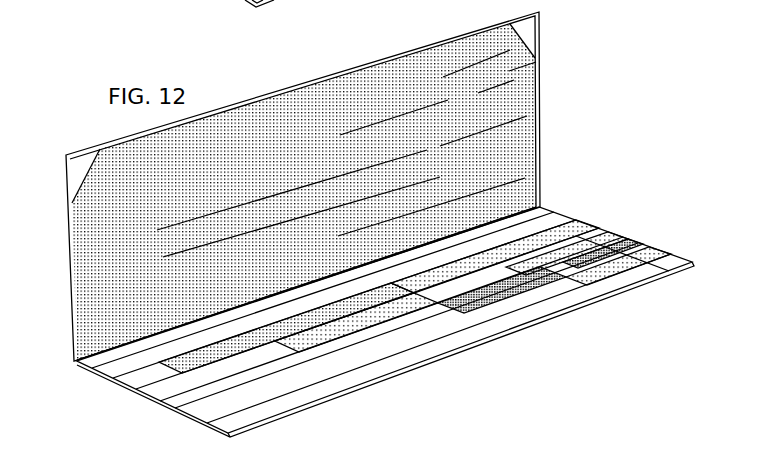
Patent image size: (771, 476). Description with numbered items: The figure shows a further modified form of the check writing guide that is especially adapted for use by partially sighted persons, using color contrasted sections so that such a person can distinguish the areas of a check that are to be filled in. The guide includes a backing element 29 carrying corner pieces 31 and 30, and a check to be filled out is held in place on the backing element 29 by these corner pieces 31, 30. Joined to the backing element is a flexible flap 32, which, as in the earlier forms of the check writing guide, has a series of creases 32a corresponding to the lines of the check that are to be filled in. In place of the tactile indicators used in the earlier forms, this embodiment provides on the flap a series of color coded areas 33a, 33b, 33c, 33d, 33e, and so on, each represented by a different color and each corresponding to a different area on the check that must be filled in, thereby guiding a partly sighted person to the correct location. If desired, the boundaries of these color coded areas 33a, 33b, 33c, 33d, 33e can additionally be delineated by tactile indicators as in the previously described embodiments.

The backing element 29 is at (540, 160).
The corner piece 30 is at (528, 33).
The corner piece 31 is at (78, 168).
The flexible flap 32 is at (337, 381).
The creases 32a is at (415, 340).
The color coded area 33a is at (600, 292).
The color coded area 33b is at (505, 298).
The color coded area 33c is at (617, 242).
The color coded area 33d is at (165, 373).
The color coded area 33e is at (572, 230).